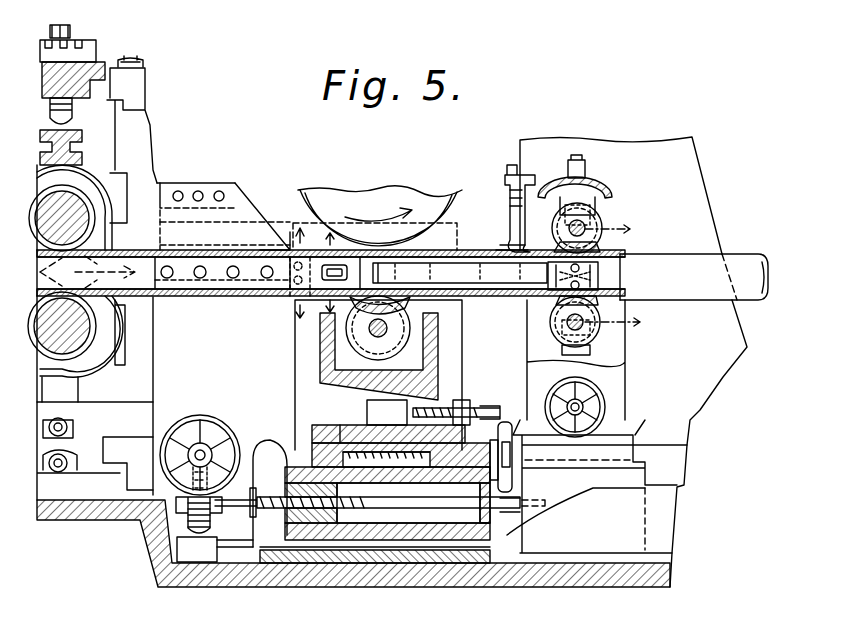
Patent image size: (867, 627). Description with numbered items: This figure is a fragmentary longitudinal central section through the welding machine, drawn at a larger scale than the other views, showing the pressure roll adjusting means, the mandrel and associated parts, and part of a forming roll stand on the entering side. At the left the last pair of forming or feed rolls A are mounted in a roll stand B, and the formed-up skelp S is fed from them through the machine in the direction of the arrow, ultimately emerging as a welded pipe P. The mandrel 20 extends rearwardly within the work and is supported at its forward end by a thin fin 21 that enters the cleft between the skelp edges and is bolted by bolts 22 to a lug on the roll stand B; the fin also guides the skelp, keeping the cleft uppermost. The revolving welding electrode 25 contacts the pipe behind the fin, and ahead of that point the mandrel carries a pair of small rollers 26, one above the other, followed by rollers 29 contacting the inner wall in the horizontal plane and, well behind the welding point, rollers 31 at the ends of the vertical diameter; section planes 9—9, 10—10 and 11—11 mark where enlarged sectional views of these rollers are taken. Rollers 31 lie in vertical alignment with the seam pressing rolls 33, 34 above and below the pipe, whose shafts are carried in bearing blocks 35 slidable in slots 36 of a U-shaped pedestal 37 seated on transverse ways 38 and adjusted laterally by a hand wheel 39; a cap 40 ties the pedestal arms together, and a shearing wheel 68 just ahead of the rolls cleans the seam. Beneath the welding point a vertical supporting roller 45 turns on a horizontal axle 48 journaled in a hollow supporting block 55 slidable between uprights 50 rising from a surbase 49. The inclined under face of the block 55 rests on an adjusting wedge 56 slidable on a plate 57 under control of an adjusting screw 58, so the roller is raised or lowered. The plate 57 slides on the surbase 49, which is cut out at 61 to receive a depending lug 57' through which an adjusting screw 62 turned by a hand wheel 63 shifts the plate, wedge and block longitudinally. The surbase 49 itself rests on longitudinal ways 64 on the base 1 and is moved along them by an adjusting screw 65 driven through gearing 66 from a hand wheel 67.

The base 1 is at (382, 560).
The roll stand B is at (158, 148).
The forming or feed rolls A is at (88, 198).
The formed-up skelp S is at (215, 296).
The bolts 22 is at (208, 210).
The fin 21 is at (250, 208).
The welding electrode 25 is at (385, 183).
The rollers 29 is at (356, 255).
The section plane 9— 9 is at (375, 273).
The section plane 10— 10 is at (331, 274).
The rollers 26 is at (290, 296).
The mandrel 20 is at (434, 273).
The shearing wheel 68 is at (506, 232).
The cap 40 is at (595, 190).
The seam pressing roll 33 is at (598, 222).
The bearing blocks 35 is at (593, 205).
The section plane 11— 11 is at (626, 276).
The rollers 31 is at (600, 272).
The welded pipe P is at (743, 252).
The seam pressing roll 34 is at (598, 340).
The slots 36 is at (592, 350).
The pedestal 37 is at (627, 365).
The hand wheel 39 is at (600, 400).
The ways 38 is at (630, 425).
The uprights 50 is at (465, 355).
The supporting block 55 is at (440, 350).
The supporting roller 45 is at (378, 328).
The axle 48 is at (388, 320).
The adjusting wedge 56 is at (387, 412).
The plate 57 is at (388, 422).
The adjusting screw 58 is at (485, 405).
The cut-out 61 is at (432, 468).
The lug 57' is at (387, 495).
The adjusting screw 65 is at (380, 512).
The surbase 49 is at (318, 552).
The hand wheel 63 is at (522, 478).
The adjusting screw 62 is at (312, 453).
The hand wheel 67 is at (200, 418).
The gearing 66 is at (200, 536).
The ways 64 is at (270, 555).